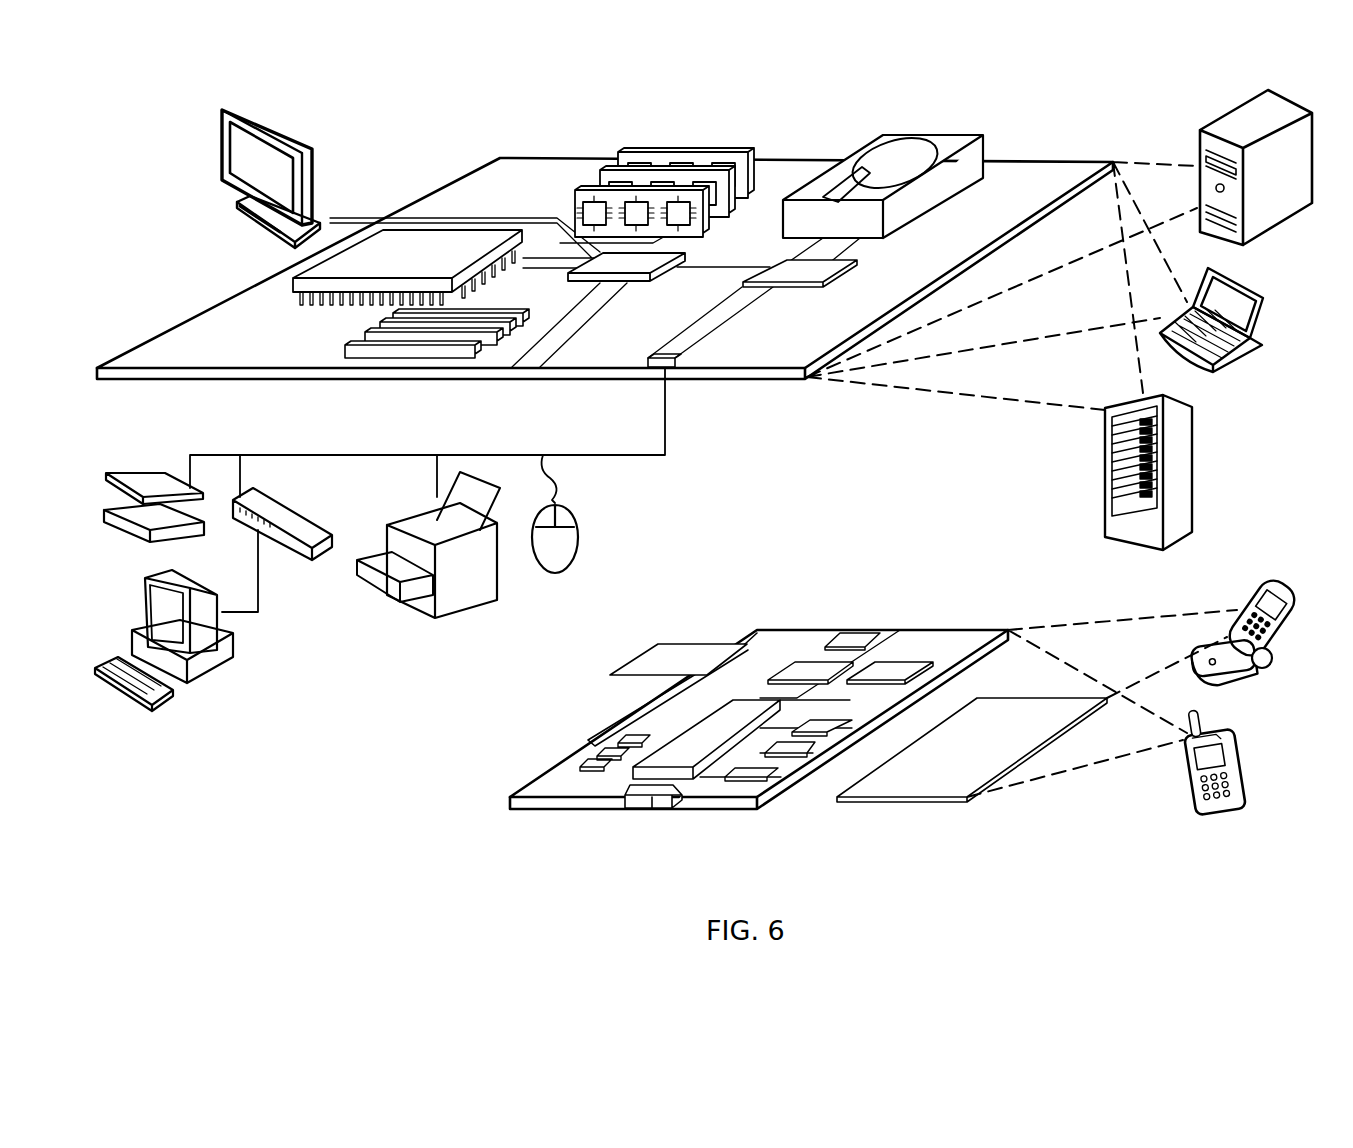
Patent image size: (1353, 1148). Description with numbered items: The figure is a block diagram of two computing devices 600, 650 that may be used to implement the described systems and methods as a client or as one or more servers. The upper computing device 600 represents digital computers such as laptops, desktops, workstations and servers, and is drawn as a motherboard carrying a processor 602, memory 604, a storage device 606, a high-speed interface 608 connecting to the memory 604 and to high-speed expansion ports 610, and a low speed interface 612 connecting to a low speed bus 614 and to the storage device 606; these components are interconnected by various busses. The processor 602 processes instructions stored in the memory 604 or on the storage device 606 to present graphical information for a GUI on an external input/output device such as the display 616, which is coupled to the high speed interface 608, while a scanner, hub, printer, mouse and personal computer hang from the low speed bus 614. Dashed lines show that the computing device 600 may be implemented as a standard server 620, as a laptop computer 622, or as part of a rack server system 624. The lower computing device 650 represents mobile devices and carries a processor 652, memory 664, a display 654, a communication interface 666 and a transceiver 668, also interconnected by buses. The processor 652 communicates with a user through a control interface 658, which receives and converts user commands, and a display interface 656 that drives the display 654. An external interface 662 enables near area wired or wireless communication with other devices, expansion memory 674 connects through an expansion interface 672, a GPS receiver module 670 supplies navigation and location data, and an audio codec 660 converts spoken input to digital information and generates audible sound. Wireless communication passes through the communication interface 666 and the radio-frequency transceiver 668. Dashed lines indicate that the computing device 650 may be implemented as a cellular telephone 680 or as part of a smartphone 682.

The computing device 600 is at (428, 128).
The processor 602 is at (303, 280).
The memory 604 is at (642, 152).
The storage device 606 is at (878, 140).
The high-speed interface 608 is at (598, 262).
The high-speed expansion ports 610 is at (373, 340).
The low speed interface 612 is at (780, 266).
The low speed bus 614 is at (677, 364).
The display 616 is at (232, 108).
The standard server 620 is at (1200, 142).
The laptop computer 622 is at (1263, 296).
The rack server system 624 is at (1105, 497).
The computing device 650 is at (478, 810).
The processor 652 is at (688, 762).
The display 654 is at (930, 780).
The display interface 656 is at (757, 770).
The control interface 658 is at (792, 747).
The audio codec 660 is at (818, 727).
The external interface 662 is at (652, 808).
The memory 664 is at (600, 755).
The communication interface 666 is at (810, 668).
The transceiver 668 is at (890, 668).
The GPS receiver module 670 is at (863, 633).
The expansion interface 672 is at (733, 644).
The expansion memory 674 is at (660, 644).
The cellular telephone 680 is at (1245, 585).
The smartphone 682 is at (1187, 765).